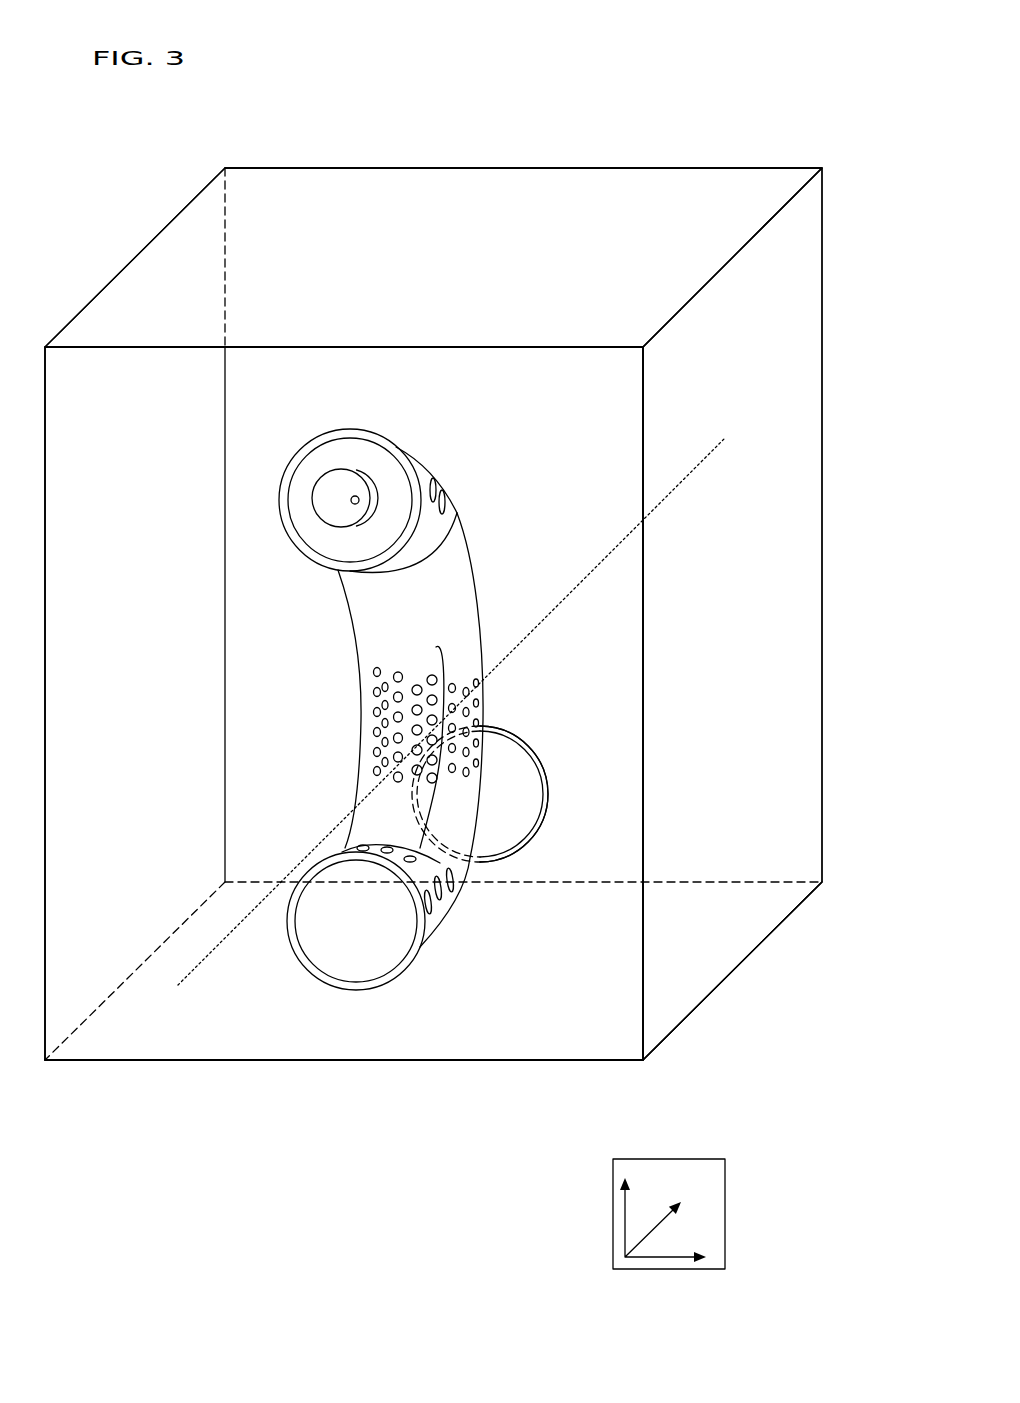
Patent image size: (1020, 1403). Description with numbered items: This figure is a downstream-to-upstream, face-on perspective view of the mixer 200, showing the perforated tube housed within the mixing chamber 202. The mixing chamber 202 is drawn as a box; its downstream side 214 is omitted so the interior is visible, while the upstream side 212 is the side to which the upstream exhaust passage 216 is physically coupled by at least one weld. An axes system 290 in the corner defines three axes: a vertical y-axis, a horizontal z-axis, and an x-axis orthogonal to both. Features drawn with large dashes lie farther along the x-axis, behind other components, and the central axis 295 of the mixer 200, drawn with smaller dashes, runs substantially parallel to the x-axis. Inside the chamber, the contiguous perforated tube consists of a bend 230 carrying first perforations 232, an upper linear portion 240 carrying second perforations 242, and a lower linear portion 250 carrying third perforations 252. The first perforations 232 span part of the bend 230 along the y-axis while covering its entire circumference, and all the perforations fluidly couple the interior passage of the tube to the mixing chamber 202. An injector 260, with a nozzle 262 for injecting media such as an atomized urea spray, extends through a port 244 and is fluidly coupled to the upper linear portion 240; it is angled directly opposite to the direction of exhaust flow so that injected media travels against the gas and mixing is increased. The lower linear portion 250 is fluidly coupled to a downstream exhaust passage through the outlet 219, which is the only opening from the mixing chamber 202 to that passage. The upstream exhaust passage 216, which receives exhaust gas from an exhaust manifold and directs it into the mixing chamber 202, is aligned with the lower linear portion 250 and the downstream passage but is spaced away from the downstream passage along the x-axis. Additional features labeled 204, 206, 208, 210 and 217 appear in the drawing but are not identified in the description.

The mixer 200 is at (148, 110).
The mixing chamber 202 is at (718, 108).
The right side wall 204 is at (778, 648).
The front wall 206 is at (160, 583).
The top wall 208 is at (477, 283).
The bottom wall 210 is at (522, 976).
The upstream side 212 is at (433, 168).
The downstream side 214 is at (375, 1060).
The upstream exhaust passage 216 is at (523, 809).
The ring outer surface 217 is at (527, 740).
The outlet 219 is at (331, 984).
The bend 230 is at (316, 710).
The first perforations 232 is at (391, 659).
The upper linear portion 240 is at (437, 435).
The second perforations 242 is at (454, 518).
The port 244 is at (290, 468).
The lower linear portion 250 is at (428, 996).
The third perforations 252 is at (444, 912).
The injector 260 is at (348, 520).
The nozzle 262 is at (360, 500).
The axes system 290 is at (705, 1159).
The central axis 295 is at (710, 452).